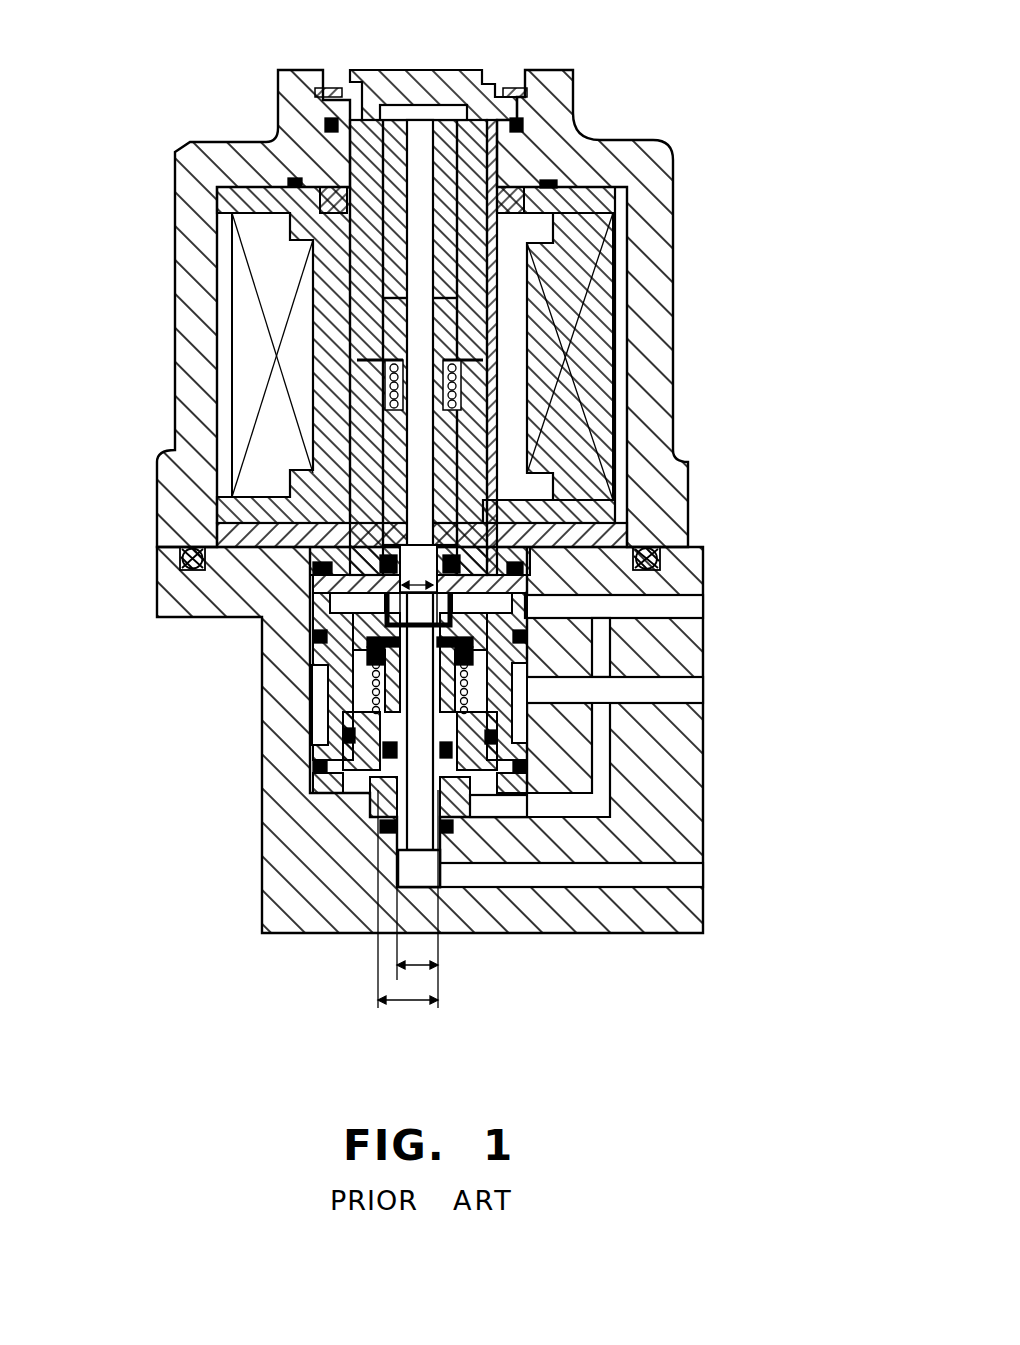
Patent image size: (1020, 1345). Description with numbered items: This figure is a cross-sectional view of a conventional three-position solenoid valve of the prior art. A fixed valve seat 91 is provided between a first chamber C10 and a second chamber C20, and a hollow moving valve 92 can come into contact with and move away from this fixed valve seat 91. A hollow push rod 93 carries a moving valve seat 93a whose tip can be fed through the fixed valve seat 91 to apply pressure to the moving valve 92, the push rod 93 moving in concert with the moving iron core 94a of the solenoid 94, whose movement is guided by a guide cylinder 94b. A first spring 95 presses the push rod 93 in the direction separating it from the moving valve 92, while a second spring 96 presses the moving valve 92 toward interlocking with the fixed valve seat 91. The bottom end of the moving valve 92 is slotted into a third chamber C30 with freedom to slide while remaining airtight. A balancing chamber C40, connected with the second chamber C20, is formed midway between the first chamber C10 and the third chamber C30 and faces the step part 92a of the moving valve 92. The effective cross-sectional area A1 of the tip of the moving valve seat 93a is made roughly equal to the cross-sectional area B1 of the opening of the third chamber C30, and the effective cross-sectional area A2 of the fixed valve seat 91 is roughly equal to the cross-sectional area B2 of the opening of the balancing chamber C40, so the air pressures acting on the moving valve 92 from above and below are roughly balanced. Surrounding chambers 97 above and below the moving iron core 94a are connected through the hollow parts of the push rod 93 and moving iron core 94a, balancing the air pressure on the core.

The solenoid 94 is at (683, 255).
The moving iron core 94a is at (367, 163).
The guide cylinder 94b is at (347, 272).
The first spring 95 is at (527, 393).
The surrounding chambers 97 is at (419, 108).
The push rod 93 is at (440, 433).
The moving valve seat 93a is at (450, 610).
The fixed valve seat 91 is at (367, 637).
The second spring 96 is at (372, 745).
The moving valve 92 is at (380, 790).
The step part 92a is at (453, 817).
The effective cross-sectional area of the tip of the moving valve seat A1 is at (418, 583).
The effective cross-sectional area of the fixed valve seat A2 is at (425, 650).
The cross-sectional area of the opening of the third chamber B1 is at (417, 968).
The cross-sectional area of the opening of the balancing chamber B2 is at (417, 1003).
The first chamber C10 is at (363, 683).
The second chamber C20 is at (350, 600).
The third chamber C30 is at (412, 870).
The balancing chamber C40 is at (395, 820).